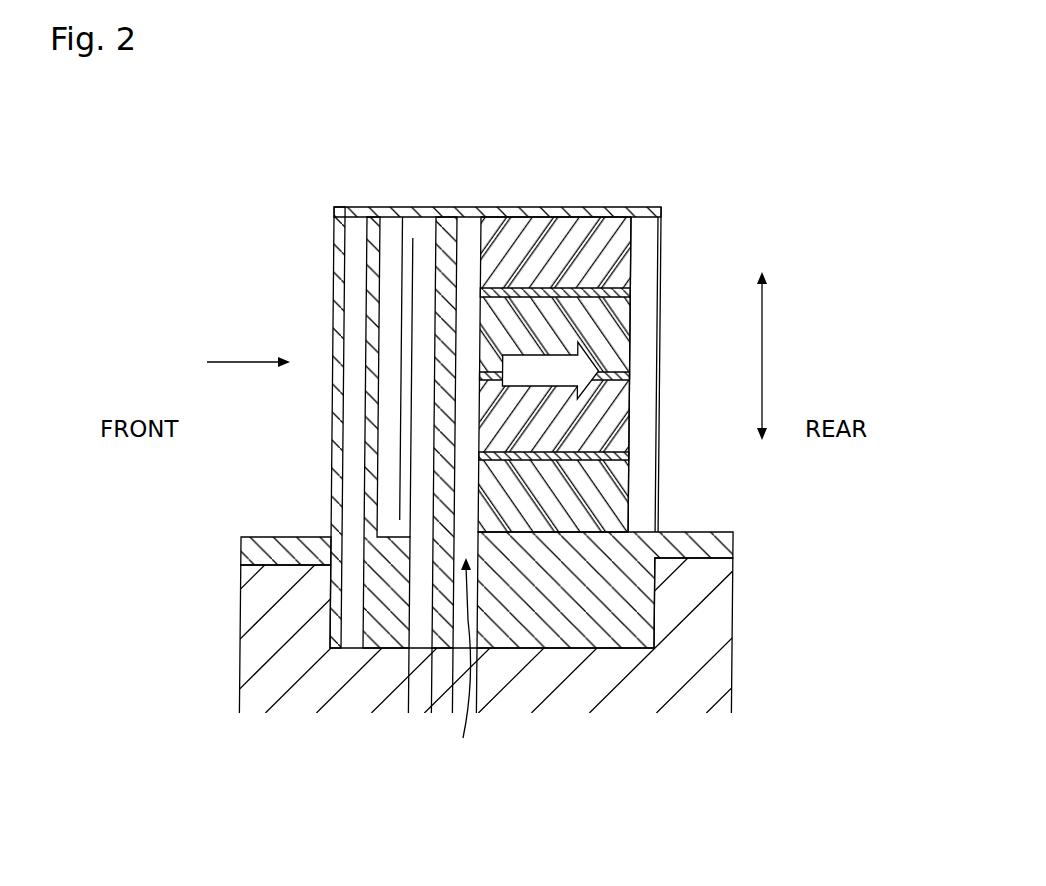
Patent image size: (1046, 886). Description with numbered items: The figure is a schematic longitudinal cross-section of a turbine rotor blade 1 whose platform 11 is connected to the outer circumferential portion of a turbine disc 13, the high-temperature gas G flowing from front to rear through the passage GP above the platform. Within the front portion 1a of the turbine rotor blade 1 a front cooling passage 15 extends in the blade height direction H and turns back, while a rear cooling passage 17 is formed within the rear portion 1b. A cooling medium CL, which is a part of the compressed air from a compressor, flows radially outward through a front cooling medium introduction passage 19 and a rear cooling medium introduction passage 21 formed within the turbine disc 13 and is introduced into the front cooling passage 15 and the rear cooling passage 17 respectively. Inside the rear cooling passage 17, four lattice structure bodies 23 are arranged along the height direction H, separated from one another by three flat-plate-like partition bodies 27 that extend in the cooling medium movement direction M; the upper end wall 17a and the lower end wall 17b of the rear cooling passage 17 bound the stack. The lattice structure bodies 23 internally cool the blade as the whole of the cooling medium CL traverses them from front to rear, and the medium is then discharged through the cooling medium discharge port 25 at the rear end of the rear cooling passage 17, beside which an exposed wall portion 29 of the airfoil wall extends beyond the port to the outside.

The turbine rotor blade 1 is at (495, 386).
The front portion 1a is at (333, 236).
The rear portion 1b is at (642, 207).
The platform 11 is at (272, 548).
The turbine disc 13 is at (708, 662).
The front cooling passage 15 is at (421, 236).
The rear cooling passage 17 is at (579, 431).
The upper end wall 17a is at (491, 216).
The lower end wall 17b is at (600, 518).
The front cooling medium introduction passage 19 is at (417, 675).
The rear cooling medium introduction passage 21 is at (470, 687).
The lattice structure body 23 is at (603, 330).
The cooling medium discharge port 25 is at (632, 278).
The partition body 27 is at (630, 292).
The exposed wall portion 29 is at (644, 228).
The cooling medium movement direction M is at (583, 370).
The high-temperature gas G is at (242, 362).
The blade height direction H is at (768, 356).
The cooling medium CL is at (463, 663).
The passage GP is at (796, 590).